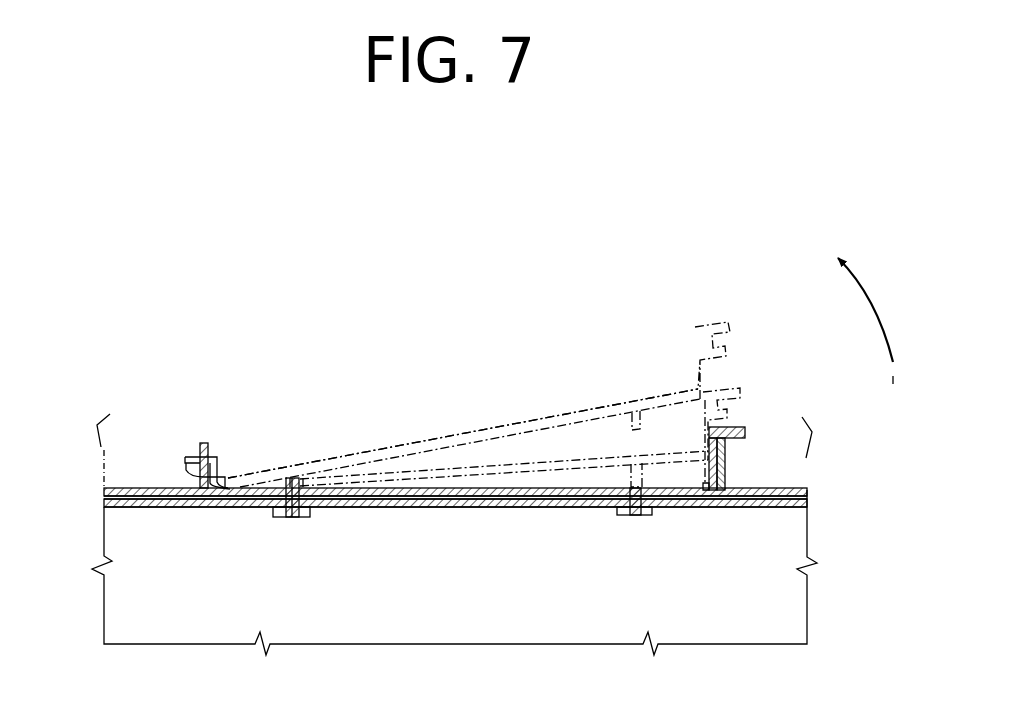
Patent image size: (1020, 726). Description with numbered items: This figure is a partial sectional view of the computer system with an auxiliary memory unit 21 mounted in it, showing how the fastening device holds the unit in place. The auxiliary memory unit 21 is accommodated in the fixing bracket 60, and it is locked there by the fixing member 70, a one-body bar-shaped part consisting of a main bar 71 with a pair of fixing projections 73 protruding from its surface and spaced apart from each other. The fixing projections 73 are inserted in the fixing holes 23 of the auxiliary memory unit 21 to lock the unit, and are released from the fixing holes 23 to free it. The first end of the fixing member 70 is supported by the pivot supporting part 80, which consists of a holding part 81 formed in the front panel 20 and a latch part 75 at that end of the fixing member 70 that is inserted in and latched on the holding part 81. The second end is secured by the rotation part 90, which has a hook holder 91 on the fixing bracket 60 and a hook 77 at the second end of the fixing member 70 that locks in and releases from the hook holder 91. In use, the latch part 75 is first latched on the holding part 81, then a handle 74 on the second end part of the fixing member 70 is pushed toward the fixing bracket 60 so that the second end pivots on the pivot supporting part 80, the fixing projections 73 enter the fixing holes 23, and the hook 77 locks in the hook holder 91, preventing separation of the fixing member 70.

The front panel 20 is at (104, 490).
The auxiliary memory unit 21 is at (167, 507).
The fixing holes 23 is at (277, 518).
The fixing bracket 60 is at (808, 486).
The fixing member 70 is at (546, 485).
The main bar 71 is at (381, 487).
The fixing projections 73 is at (294, 518).
The handle 74 is at (740, 426).
The latch part 75 is at (196, 470).
The hook 77 is at (728, 452).
The pivot supporting part 80 is at (146, 450).
The holding part 81 is at (187, 474).
The rotation part 90 is at (773, 428).
The hook holder 91 is at (730, 478).